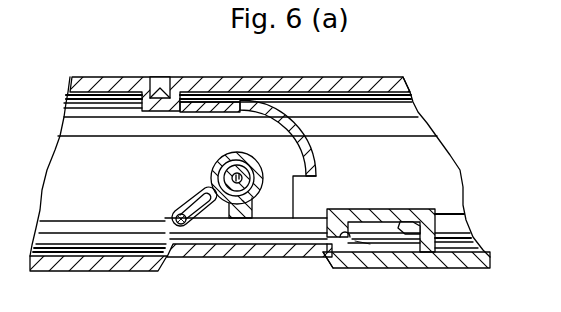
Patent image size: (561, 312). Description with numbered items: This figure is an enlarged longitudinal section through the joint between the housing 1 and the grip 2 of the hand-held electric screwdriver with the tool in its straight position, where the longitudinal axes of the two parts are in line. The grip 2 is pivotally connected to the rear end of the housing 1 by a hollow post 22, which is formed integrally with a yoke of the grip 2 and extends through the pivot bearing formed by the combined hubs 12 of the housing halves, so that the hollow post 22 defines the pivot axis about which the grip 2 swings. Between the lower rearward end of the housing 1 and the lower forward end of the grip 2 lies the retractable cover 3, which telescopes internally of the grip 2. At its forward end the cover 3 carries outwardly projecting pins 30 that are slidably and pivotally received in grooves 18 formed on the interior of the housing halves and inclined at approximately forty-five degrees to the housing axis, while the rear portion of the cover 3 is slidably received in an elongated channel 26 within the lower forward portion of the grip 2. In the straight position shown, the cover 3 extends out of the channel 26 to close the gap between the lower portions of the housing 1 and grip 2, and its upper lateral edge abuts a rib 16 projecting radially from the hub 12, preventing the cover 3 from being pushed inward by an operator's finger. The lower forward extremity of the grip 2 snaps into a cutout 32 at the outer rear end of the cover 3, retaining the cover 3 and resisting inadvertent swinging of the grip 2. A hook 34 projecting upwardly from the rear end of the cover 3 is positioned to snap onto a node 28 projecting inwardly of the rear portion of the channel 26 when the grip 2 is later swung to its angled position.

The housing 1 is at (104, 77).
The grip 2 is at (350, 78).
The retractable cover 3 is at (258, 257).
The hub 12 is at (248, 158).
The rib 16 is at (234, 219).
The groove 18 is at (201, 207).
The hollow post 22 is at (231, 157).
The channel 26 is at (405, 254).
The node 28 is at (410, 236).
The pin 30 is at (143, 271).
The cutout 32 is at (333, 264).
The hook 34 is at (376, 262).